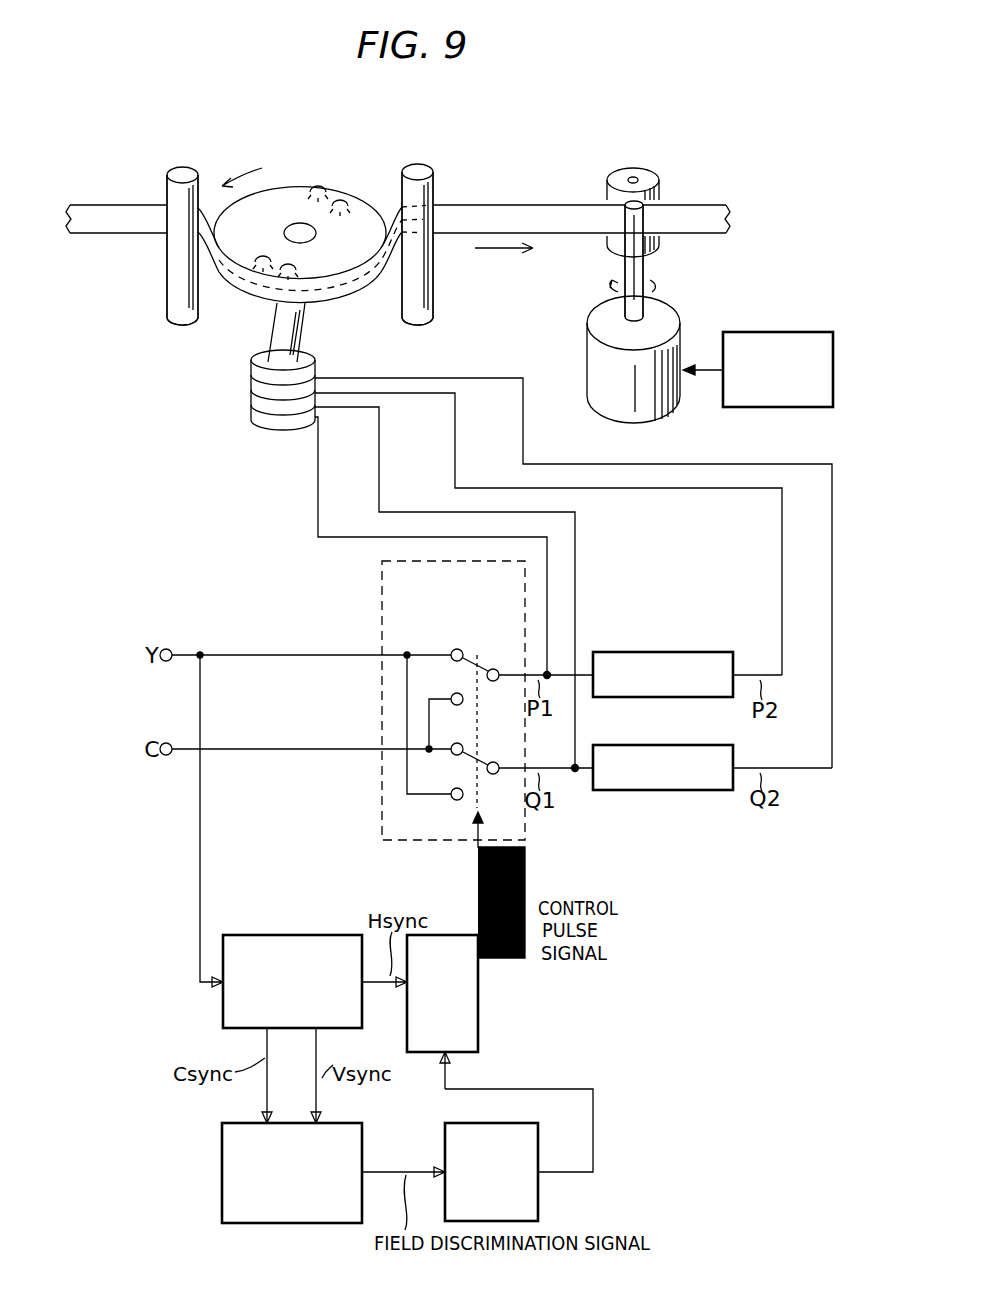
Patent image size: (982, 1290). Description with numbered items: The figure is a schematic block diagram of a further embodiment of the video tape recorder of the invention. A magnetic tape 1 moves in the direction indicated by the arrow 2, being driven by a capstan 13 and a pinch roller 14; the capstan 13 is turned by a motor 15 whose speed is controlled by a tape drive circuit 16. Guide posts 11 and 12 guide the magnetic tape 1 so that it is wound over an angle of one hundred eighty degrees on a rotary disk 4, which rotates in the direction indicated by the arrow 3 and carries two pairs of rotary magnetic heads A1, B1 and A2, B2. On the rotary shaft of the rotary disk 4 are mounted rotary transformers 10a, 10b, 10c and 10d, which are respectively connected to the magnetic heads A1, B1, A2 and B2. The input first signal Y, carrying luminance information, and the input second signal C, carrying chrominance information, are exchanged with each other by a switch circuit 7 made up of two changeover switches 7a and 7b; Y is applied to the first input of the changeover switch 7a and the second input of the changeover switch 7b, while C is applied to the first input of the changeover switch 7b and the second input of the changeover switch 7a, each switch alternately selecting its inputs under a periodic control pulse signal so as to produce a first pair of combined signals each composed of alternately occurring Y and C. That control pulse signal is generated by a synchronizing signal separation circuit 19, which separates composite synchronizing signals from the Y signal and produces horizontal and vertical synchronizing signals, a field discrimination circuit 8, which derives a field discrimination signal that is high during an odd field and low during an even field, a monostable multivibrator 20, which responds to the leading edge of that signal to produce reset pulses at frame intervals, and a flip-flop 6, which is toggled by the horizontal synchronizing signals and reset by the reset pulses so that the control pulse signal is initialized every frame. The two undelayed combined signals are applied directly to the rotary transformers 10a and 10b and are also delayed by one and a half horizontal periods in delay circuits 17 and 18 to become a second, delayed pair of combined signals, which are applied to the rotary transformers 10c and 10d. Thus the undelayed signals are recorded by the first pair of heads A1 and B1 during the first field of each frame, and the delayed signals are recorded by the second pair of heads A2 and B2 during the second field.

The magnetic tape 1 is at (535, 204).
The arrow indicating tape moving direction 2 is at (505, 250).
The arrow indicating head scanning direction 3 is at (242, 178).
The rotary disk 4 is at (290, 187).
The flip-flop 6 is at (478, 1030).
The switch circuit 7 is at (383, 614).
The changeover switch 7a is at (490, 682).
The changeover switch 7b is at (490, 775).
The field discrimination circuit 8 is at (222, 1186).
The rotary transformer 10a is at (255, 422).
The rotary transformer 10b is at (252, 400).
The rotary transformer 10c is at (252, 384).
The rotary transformer 10d is at (255, 370).
The guide post 11 is at (182, 168).
The guide post 12 is at (433, 170).
The capstan 13 is at (647, 268).
The pinch roller 14 is at (656, 176).
The motor 15 is at (678, 310).
The tape drive circuit 16 is at (787, 332).
The delay circuit 17 is at (733, 652).
The delay circuit 18 is at (605, 791).
The synchronizing signal separation circuit 19 is at (282, 937).
The monostable multivibrator 20 is at (538, 1190).
The rotary magnetic head A1 is at (296, 270).
The rotary magnetic head A2 is at (316, 190).
The rotary magnetic head B1 is at (260, 262).
The rotary magnetic head B2 is at (346, 204).